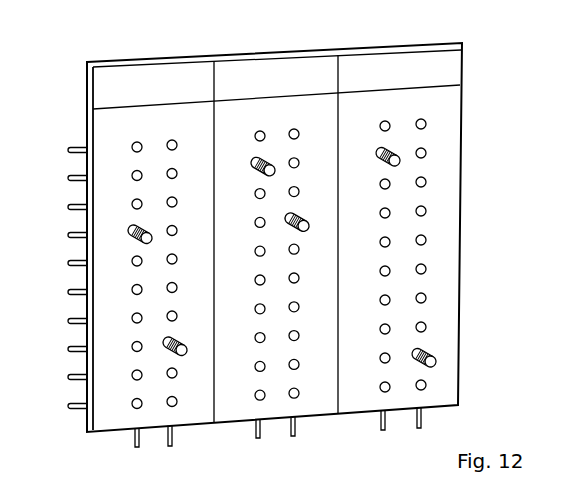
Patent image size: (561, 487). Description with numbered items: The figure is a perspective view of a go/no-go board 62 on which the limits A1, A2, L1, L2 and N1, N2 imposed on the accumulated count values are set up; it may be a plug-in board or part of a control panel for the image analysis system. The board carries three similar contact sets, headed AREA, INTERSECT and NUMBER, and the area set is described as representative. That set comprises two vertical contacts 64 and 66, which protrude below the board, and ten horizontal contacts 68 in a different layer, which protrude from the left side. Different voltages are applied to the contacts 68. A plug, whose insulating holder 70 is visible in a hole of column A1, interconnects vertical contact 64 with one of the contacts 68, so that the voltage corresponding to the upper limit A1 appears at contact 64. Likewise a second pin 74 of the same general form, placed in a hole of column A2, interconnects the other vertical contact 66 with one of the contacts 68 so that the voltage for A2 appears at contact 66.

The go/no-go board 62 is at (299, 51).
The vertical contact 64 is at (136, 449).
The vertical contact 66 is at (171, 449).
The horizontal contacts 68 is at (55, 418).
The insulating holder 70 is at (135, 237).
The second pin 74 is at (177, 342).